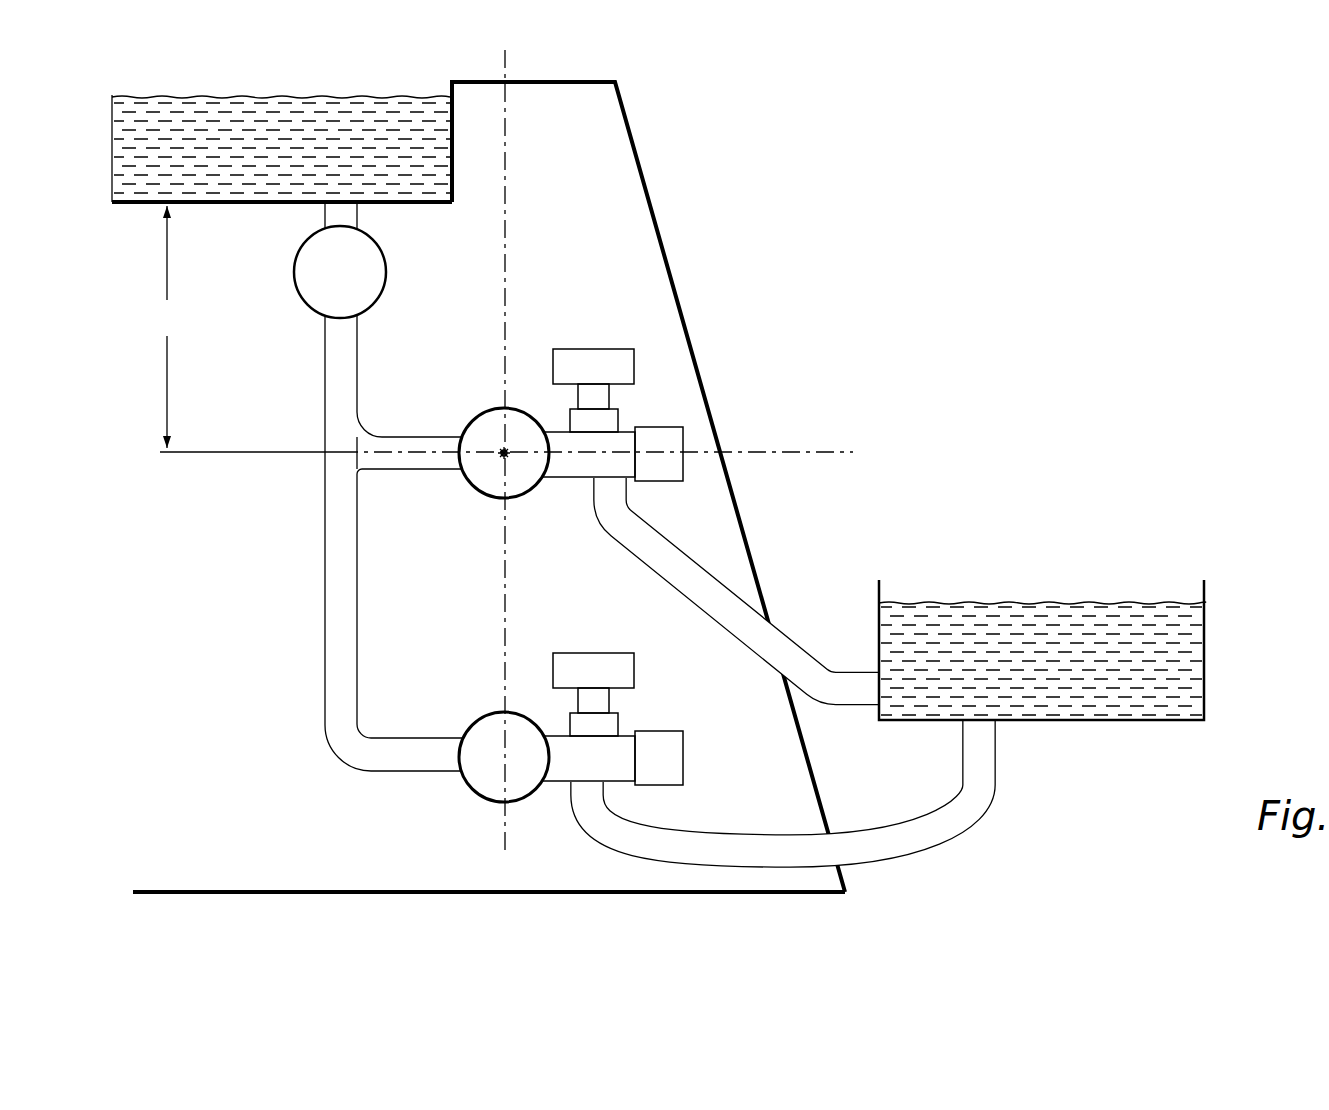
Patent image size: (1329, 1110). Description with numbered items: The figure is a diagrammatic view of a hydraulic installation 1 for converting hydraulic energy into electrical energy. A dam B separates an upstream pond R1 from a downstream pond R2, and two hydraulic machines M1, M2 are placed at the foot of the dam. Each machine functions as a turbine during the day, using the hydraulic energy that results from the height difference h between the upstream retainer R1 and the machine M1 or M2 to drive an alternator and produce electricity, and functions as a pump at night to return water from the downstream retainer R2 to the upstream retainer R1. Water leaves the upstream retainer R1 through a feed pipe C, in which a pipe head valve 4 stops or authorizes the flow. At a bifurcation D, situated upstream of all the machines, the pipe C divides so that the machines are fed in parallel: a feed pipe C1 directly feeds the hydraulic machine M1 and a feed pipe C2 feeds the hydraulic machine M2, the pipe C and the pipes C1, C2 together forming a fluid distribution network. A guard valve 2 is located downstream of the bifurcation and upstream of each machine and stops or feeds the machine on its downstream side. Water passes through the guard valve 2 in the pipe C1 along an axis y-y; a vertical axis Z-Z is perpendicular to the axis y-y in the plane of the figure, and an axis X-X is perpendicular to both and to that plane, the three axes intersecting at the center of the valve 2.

The hydraulic installation 1 is at (900, 305).
The guard valve 2 is at (490, 423).
The pipe head valve 4 is at (340, 272).
The dam B is at (638, 155).
The feed pipe C is at (338, 360).
The feed pipe of hydraulic machine M1 C1 is at (423, 444).
The feed pipe of hydraulic machine M2 C2 is at (412, 753).
The bifurcation D is at (352, 446).
The hydraulic machine M1 is at (657, 384).
The hydraulic machine M2 is at (646, 717).
The upstream pond R1 is at (283, 92).
The downstream pond R2 is at (1053, 594).
The height difference h is at (250, 329).
The axis X-X is at (500, 470).
The axis y-y is at (612, 449).
The axis Z-Z is at (505, 440).